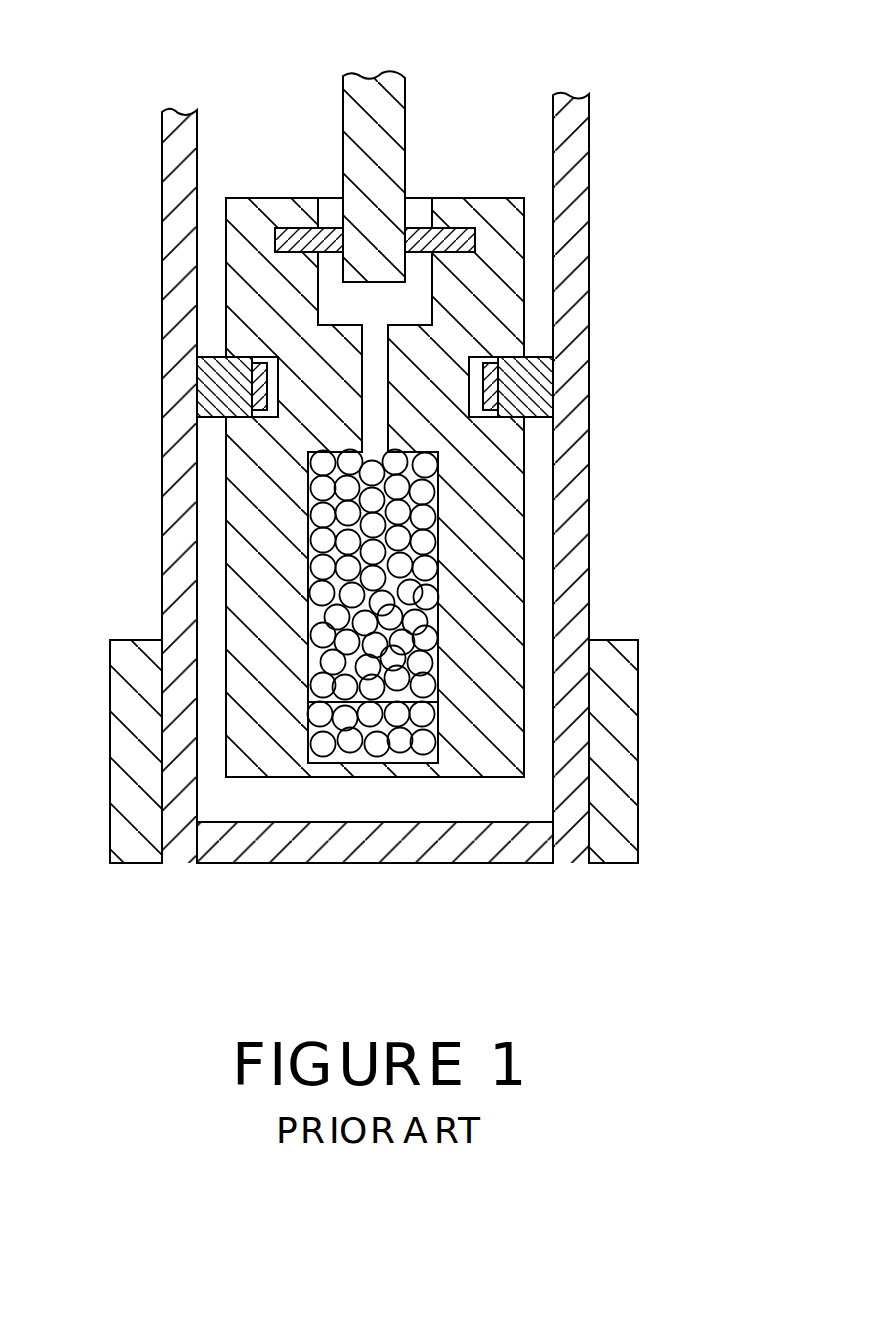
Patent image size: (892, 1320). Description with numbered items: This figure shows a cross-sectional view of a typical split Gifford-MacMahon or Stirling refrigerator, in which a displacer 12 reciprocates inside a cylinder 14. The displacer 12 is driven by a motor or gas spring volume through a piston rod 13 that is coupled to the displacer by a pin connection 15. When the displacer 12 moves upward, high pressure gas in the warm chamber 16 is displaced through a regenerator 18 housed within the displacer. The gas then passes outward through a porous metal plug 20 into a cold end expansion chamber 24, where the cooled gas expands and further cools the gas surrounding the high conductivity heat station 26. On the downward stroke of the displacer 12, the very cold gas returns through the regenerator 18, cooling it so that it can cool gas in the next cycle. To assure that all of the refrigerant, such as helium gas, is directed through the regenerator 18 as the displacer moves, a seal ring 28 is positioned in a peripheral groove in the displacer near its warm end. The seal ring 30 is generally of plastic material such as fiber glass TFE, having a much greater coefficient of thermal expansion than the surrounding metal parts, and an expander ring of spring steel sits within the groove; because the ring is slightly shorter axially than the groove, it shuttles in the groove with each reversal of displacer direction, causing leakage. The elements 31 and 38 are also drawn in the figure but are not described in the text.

The displacer 12 is at (525, 538).
The piston rod 13 is at (343, 96).
The cylinder 14 is at (590, 178).
The pin connection 15 is at (418, 227).
The warm chamber 16 is at (217, 163).
The regenerator 18 is at (323, 600).
The porous metal plug 20 is at (328, 750).
The cold end expansion chamber 24 is at (463, 803).
The high conductivity heat station 26 is at (638, 777).
The seal ring 28 is at (205, 382).
The seal ring 30 is at (540, 375).
The right seal 31 is at (475, 408).
The left seal 38 is at (250, 362).